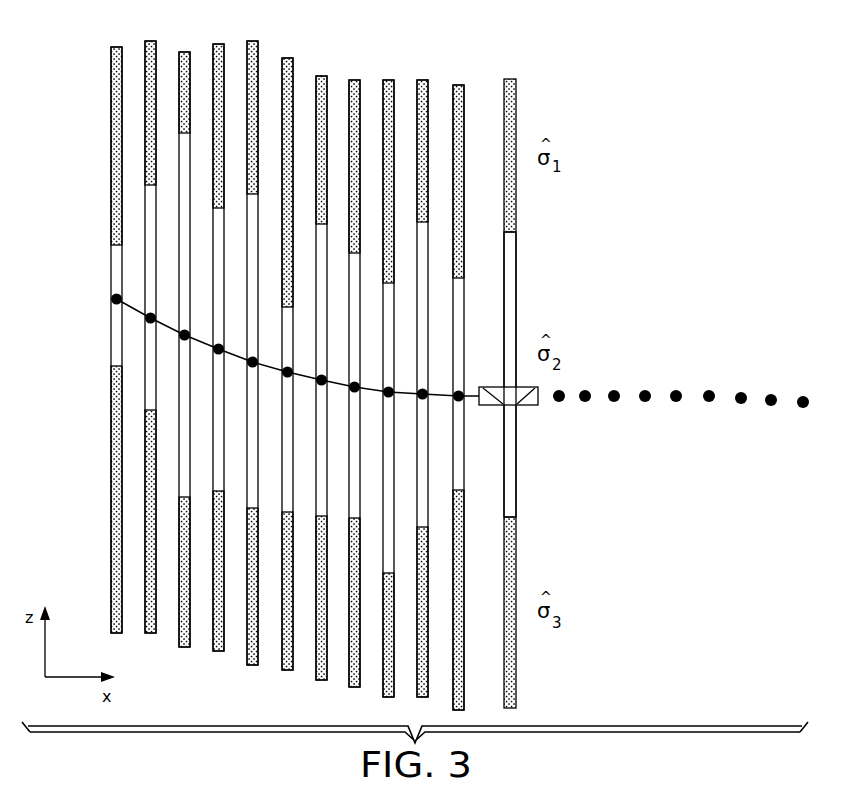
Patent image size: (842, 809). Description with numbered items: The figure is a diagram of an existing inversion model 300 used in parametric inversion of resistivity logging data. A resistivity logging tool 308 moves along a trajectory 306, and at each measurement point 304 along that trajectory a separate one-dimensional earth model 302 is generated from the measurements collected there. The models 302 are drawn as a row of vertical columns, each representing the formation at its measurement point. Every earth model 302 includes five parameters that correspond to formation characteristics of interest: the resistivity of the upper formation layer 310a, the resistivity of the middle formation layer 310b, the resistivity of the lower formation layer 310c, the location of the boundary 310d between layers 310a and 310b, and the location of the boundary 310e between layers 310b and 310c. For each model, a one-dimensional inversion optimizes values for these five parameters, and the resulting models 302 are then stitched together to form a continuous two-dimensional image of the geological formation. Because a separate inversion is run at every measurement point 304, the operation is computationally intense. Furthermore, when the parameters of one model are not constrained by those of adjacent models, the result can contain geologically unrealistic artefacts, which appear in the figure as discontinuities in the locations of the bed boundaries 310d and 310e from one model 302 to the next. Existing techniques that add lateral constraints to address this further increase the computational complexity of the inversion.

The linear array antenna system 300 is at (696, 102).
The 1D earth model 302 is at (510, 78).
The measurement point 304 is at (112, 306).
The trajectory 306 is at (134, 310).
The resistivity logging tool 308 is at (530, 407).
The formation layer 310a is at (530, 116).
The formation layer 310b is at (522, 308).
The formation layer 310c is at (522, 677).
The boundary 310d is at (522, 231).
The boundary 310e is at (522, 518).